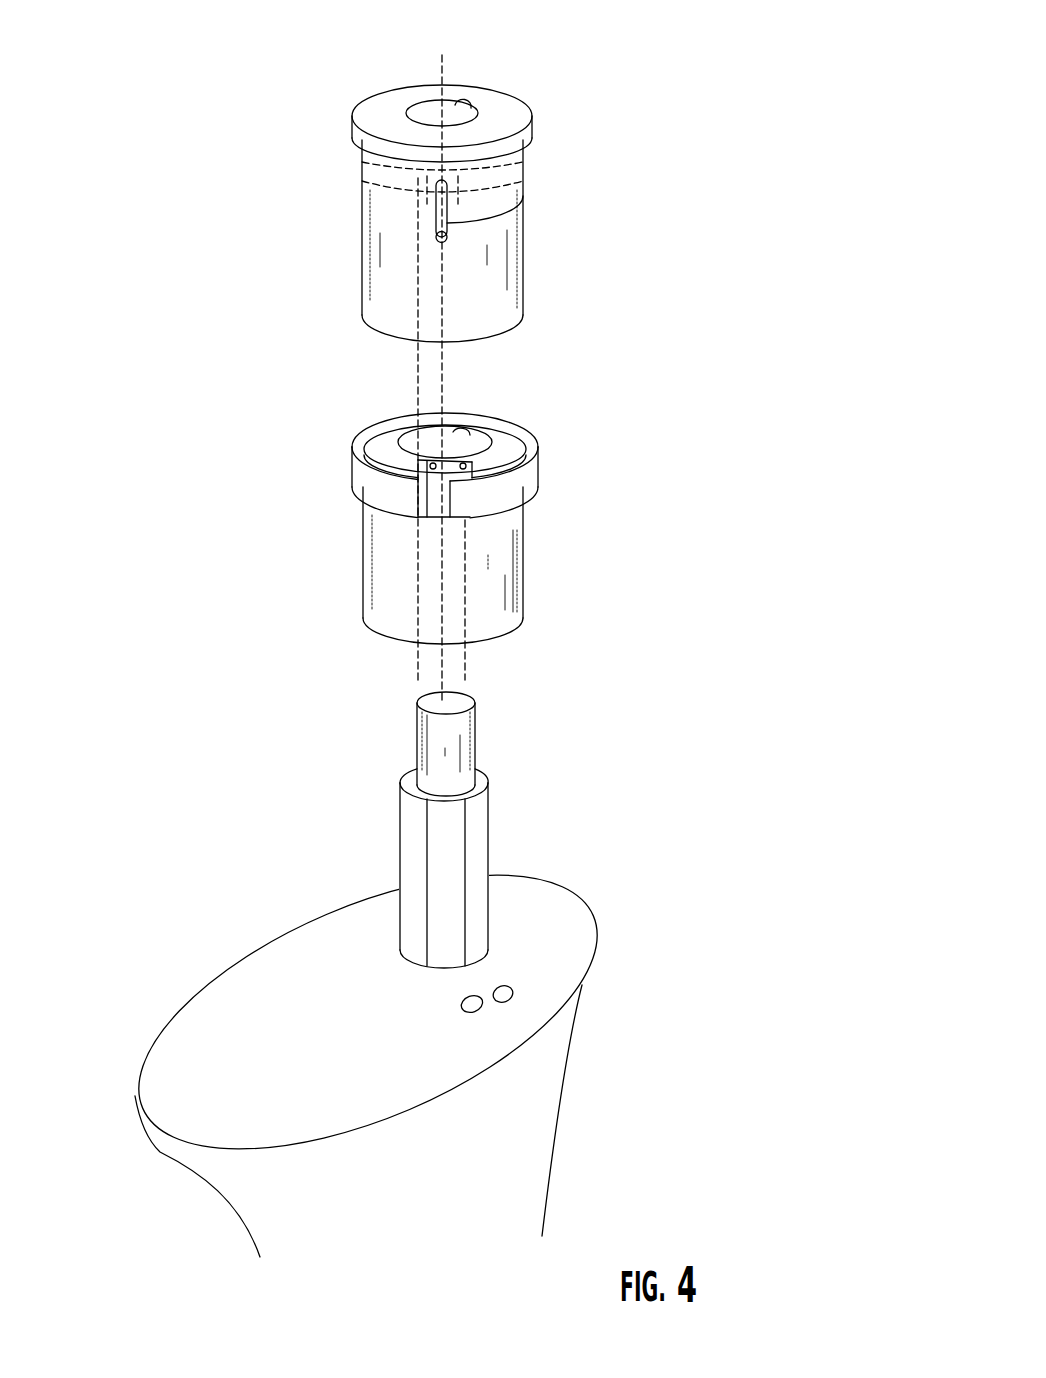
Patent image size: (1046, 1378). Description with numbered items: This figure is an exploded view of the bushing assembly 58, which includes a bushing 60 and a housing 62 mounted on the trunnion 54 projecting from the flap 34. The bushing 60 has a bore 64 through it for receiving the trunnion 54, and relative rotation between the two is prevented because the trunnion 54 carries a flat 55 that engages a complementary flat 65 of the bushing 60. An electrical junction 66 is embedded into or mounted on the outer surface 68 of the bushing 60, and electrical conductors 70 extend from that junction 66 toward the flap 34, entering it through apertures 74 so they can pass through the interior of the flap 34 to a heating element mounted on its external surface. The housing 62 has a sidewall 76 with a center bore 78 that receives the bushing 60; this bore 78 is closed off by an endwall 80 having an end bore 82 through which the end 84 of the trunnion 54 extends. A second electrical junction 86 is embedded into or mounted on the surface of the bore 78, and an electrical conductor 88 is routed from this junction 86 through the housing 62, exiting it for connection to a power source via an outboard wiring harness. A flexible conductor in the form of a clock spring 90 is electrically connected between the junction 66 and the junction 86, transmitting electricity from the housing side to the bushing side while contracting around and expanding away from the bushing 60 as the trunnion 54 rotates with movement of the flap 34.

The flap 34 is at (188, 1018).
The trunnion 54 is at (483, 835).
The flat 55 is at (452, 875).
The bushing assembly 58 is at (736, 119).
The bushing 60 is at (528, 522).
The housing 62 is at (528, 270).
The bore 64 is at (457, 437).
The complementary flat 65 is at (458, 454).
The electrical junction 66 is at (433, 507).
The outer surface 68 is at (510, 563).
The electrical conductors 70 is at (418, 610).
The apertures 74 is at (515, 994).
The sidewall 76 is at (375, 162).
The center bore 78 is at (389, 342).
The endwall 80 is at (519, 102).
The end bore 82 is at (468, 108).
The end of the trunnion 84 is at (425, 697).
The electrical junction 86 is at (523, 158).
The electrical conductor 88 is at (523, 197).
The clock spring 90 is at (360, 479).